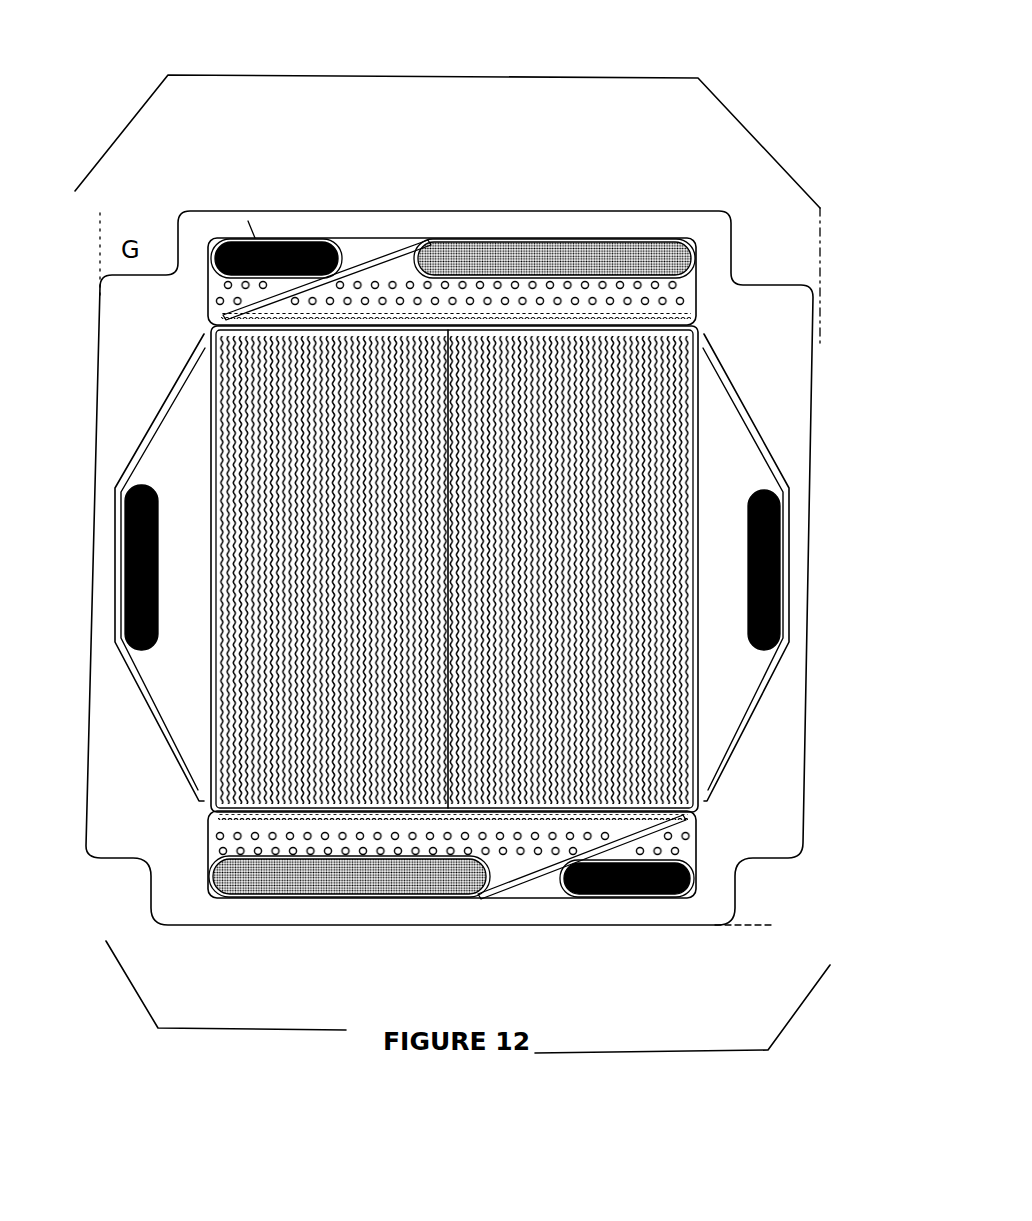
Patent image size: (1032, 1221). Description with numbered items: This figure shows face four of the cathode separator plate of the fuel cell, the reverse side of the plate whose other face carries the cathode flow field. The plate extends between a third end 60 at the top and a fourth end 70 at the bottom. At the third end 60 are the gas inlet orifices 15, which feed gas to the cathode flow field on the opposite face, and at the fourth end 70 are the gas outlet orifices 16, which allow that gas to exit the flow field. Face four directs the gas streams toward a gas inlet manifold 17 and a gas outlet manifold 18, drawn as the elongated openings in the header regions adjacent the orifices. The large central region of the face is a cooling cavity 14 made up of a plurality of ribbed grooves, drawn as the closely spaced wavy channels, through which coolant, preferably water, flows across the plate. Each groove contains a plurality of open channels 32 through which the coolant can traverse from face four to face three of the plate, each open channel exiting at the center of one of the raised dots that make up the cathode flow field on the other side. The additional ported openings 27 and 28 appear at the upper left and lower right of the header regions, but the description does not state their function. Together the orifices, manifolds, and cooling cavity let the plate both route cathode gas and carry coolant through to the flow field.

The cooling cavity 14 is at (617, 448).
The gas inlet orifices 15 is at (543, 309).
The gas outlet orifices 16 is at (210, 838).
The gas inlet manifold 17 is at (476, 267).
The gas outlet manifold 18 is at (312, 887).
The coolant inlet manifold opening 27 is at (400, 267).
The coolant outlet manifold opening 28 is at (110, 955).
The open channels 32 is at (650, 760).
The third end 60 is at (444, 77).
The fourth end 70 is at (280, 1023).